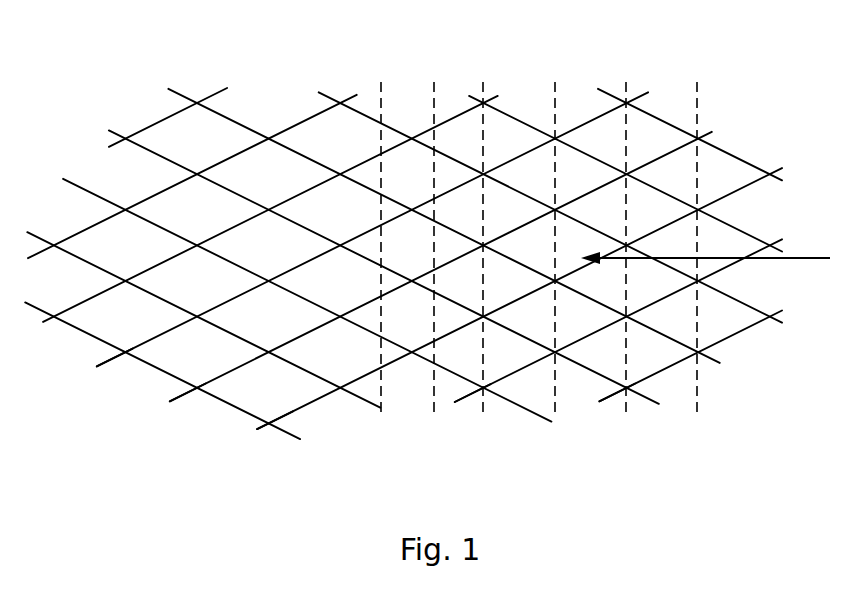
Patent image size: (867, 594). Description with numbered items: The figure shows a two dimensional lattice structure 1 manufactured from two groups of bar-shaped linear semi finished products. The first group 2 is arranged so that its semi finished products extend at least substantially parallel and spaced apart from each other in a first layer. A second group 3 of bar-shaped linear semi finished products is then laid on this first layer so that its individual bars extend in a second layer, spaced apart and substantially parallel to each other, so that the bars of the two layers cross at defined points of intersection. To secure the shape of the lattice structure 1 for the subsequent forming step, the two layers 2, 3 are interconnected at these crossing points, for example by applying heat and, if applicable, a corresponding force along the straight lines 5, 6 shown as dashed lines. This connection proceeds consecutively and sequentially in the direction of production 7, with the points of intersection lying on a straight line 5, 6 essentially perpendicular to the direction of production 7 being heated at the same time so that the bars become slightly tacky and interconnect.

The two dimensional lattice structure 1 is at (395, 452).
The first group of linear semi finished products 2 is at (70, 309).
The second group of bar-shaped linear semi finished products 3 is at (97, 372).
The straight line 5 is at (381, 89).
The straight line 6 is at (434, 89).
The direction of production 7 is at (805, 261).